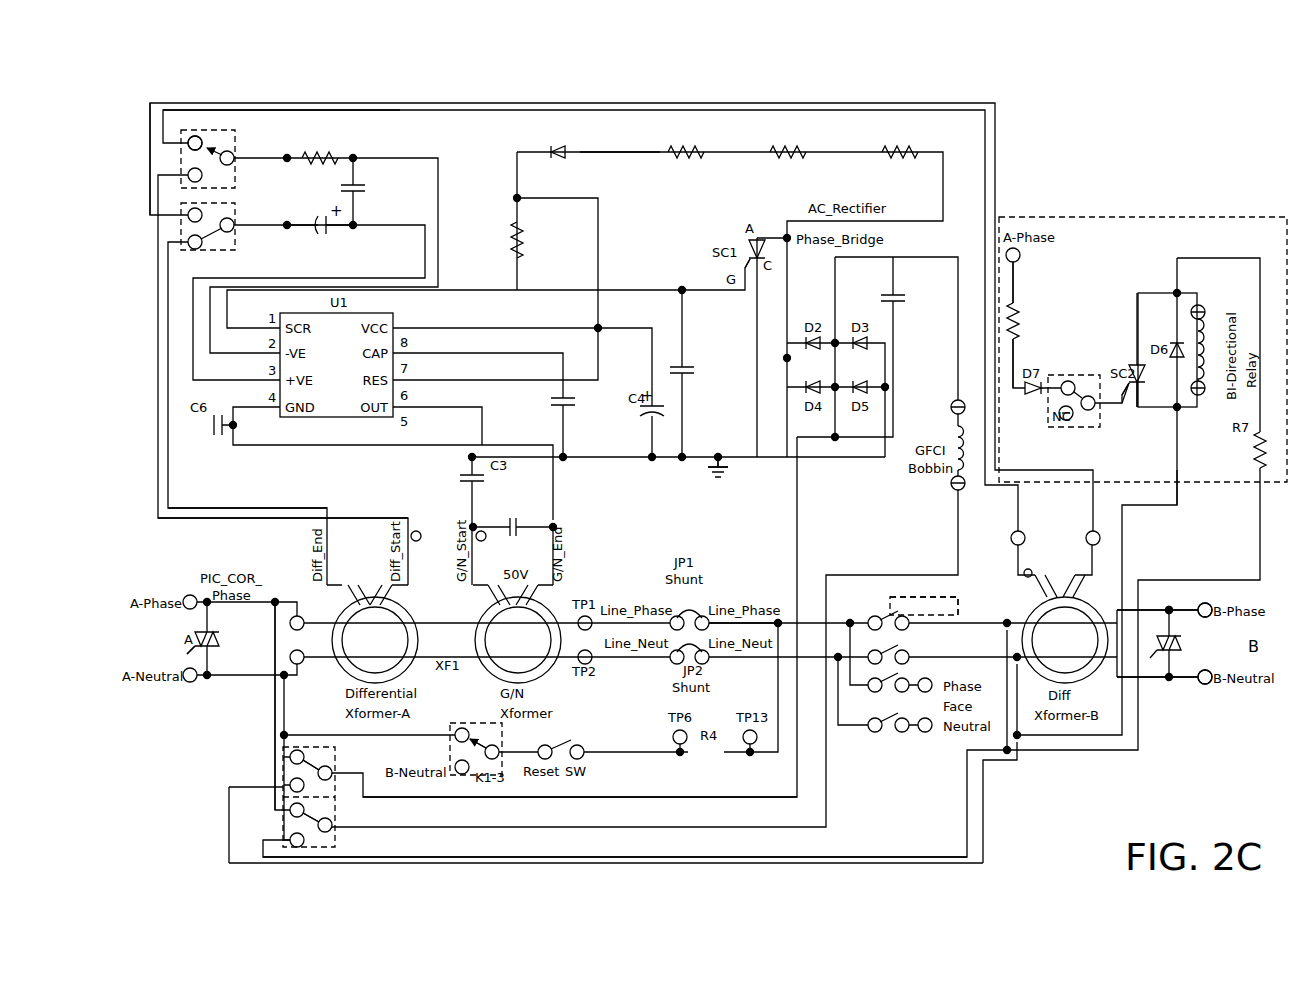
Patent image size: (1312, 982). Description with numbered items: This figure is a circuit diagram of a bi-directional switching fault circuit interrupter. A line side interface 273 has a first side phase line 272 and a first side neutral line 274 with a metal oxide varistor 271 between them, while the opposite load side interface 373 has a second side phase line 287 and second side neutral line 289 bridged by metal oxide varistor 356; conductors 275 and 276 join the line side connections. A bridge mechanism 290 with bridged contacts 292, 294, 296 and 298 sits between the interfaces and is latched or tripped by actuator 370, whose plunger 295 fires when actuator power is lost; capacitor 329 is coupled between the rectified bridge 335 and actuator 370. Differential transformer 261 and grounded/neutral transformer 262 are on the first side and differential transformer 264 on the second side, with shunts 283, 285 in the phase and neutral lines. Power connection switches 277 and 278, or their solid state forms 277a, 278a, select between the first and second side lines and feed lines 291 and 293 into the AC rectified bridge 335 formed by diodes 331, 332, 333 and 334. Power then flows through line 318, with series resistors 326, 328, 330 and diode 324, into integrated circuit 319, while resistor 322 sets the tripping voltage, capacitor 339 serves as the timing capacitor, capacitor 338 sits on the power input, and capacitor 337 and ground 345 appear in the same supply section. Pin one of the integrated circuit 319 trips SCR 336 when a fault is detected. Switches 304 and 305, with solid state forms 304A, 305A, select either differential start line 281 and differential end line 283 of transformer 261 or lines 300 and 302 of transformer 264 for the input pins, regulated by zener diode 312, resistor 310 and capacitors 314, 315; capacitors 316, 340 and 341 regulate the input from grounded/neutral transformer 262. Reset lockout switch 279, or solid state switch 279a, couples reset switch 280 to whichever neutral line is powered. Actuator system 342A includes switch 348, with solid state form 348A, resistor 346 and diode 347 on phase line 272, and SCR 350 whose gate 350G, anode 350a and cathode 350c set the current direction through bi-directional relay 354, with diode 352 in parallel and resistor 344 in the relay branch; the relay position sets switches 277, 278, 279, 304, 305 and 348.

The differential transformer 261 is at (337, 667).
The grounded/neutral transformer 262 is at (555, 667).
The differential transformer 264 is at (1090, 596).
The metal oxide varistor 271 is at (218, 640).
The first side phase line 272 is at (1013, 268).
The line side interface 273 is at (184, 636).
The first side neutral line 274 is at (198, 682).
The phase conductor 275 is at (275, 742).
The phase conductor 276 is at (275, 695).
The power connection switch 277 is at (270, 825).
The solid state switch 277a is at (328, 847).
The power connection switch 278 is at (337, 790).
The solid state switch 278a is at (337, 758).
The reset lockout switch 279 is at (490, 727).
The solid state switch 279a is at (462, 728).
The reset switch 280 is at (565, 782).
The differential start line 281 is at (292, 520).
The differential end line 283 is at (297, 508).
The shunt 285 is at (677, 664).
The second side phase line 287 is at (1176, 606).
The second side neutral line 289 is at (1148, 682).
The bridge mechanism 290 is at (938, 612).
The line 291 is at (725, 823).
The bridged contact 292 is at (876, 616).
The line 293 is at (617, 797).
The bridged contact 294 is at (908, 653).
The plunger 295 is at (955, 584).
The bridged contact 296 is at (868, 686).
The bridged contact 298 is at (880, 733).
The output line 300 is at (176, 110).
The output line 302 is at (182, 80).
The differential transformer connection switch 304 is at (237, 150).
The solid state switch 304A is at (277, 192).
The differential transformer connection switch 305 is at (176, 234).
The solid state switch 305A is at (186, 213).
The resistor 310 is at (318, 152).
The zener diode 312 is at (186, 143).
The capacitor 314 is at (356, 186).
The capacitor 315 is at (318, 227).
The capacitor 316 is at (206, 432).
The line 318 is at (625, 152).
The integrated circuit 319 is at (390, 318).
The resistor 322 is at (517, 232).
The diode 324 is at (566, 149).
The resistor 326 is at (686, 160).
The resistor 328 is at (790, 160).
The capacitor 329 is at (889, 299).
The resistor 330 is at (910, 152).
The diode 331 is at (812, 352).
The diode 332 is at (870, 348).
The diode 333 is at (870, 394).
The diode 334 is at (818, 384).
The AC rectified bridge 335 is at (790, 356).
The SCR 336 is at (746, 241).
The capacitor 337 is at (690, 366).
The capacitor 338 is at (656, 418).
The capacitor 339 is at (572, 408).
The capacitor 340 is at (468, 473).
The capacitor 341 is at (520, 522).
The actuator system 342A is at (1195, 216).
The resistor R7 344 is at (1260, 460).
The ground 345 is at (722, 463).
The resistor 346 is at (1008, 304).
The diode 347 is at (1032, 397).
The actuator switch 348 is at (1077, 390).
The solid state switch 348A is at (1055, 428).
The SCR 350 is at (1126, 360).
The SCR anode 350a is at (1136, 362).
The SCR cathode 350c is at (1141, 392).
The SCR gate 350G is at (1134, 386).
The diode 352 is at (1172, 344).
The bi-directional relay 354 is at (1205, 310).
The metal oxide varistor 356 is at (1185, 624).
The actuator 370 is at (966, 488).
The load side interface 373 is at (1268, 645).